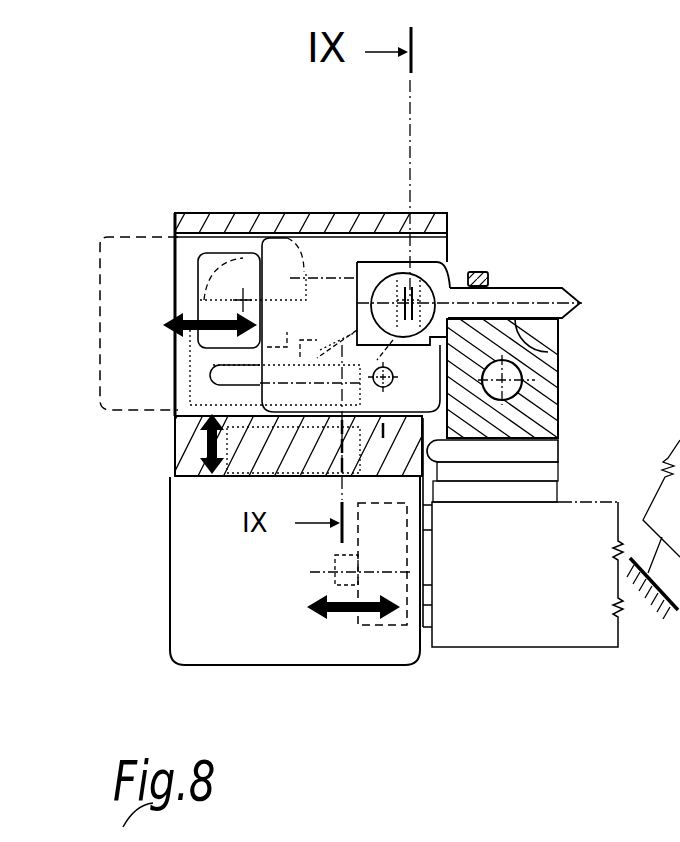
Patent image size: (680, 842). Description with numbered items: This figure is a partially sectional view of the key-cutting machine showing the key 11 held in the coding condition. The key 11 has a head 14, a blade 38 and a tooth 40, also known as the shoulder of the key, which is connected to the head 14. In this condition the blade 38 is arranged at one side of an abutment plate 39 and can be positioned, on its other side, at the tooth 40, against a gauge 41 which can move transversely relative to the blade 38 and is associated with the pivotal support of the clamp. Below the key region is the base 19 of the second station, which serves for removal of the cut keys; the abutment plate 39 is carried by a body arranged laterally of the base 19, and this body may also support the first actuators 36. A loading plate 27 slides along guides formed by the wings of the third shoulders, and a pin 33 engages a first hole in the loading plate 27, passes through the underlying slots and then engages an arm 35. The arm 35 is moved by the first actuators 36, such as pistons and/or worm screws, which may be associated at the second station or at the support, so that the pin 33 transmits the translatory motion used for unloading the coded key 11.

The key 11 is at (585, 295).
The head 14 is at (401, 262).
The base 19 is at (282, 638).
The loading plate 27 is at (324, 265).
The pin 33 is at (505, 400).
The arm 35 is at (364, 625).
The first actuators 36 is at (493, 630).
The blade 38 is at (512, 288).
The abutment plate 39 is at (578, 340).
The tooth 40 is at (466, 272).
The gauge 41 is at (488, 272).